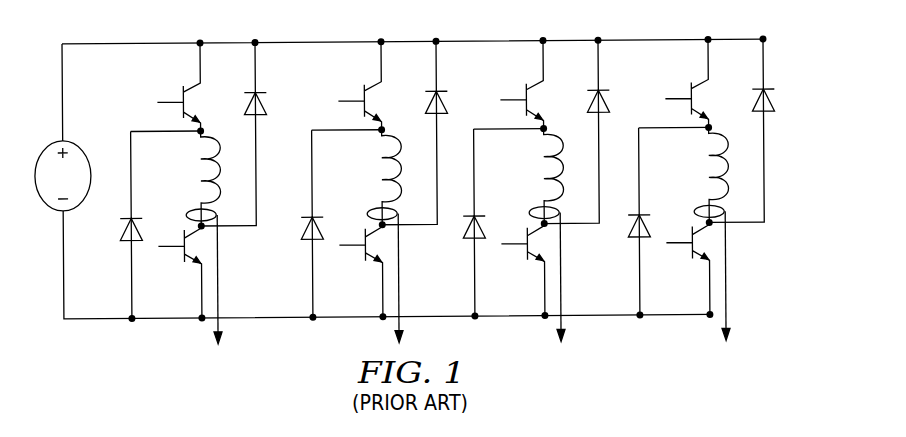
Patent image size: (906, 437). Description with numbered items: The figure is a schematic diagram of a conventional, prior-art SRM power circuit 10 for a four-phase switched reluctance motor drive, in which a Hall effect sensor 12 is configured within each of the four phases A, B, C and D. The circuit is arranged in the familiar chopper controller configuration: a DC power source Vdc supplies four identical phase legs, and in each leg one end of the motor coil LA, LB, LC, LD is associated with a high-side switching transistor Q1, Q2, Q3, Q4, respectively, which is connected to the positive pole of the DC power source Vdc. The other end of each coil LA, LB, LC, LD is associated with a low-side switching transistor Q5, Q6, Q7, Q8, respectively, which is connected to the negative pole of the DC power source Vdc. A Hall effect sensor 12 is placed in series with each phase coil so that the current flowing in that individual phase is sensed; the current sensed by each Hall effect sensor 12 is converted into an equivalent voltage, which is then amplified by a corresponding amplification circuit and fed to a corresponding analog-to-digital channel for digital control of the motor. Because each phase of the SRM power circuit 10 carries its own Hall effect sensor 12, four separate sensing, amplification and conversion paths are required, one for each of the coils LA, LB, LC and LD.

The SRM power circuit 10 is at (144, 25).
The Hall effect sensor 12 is at (214, 212).
The DC power source Vdc is at (63, 176).
The high-side switching transistor Q1 is at (193, 87).
The high-side switching transistor Q2 is at (374, 86).
The high-side switching transistor Q3 is at (536, 84).
The high-side switching transistor Q4 is at (701, 83).
The low-side switching transistor Q5 is at (180, 273).
The low-side switching transistor Q6 is at (361, 272).
The low-side switching transistor Q7 is at (523, 271).
The low-side switching transistor Q8 is at (688, 269).
The coil LA is at (195, 170).
The coil LB is at (376, 169).
The coil LC is at (538, 167).
The coil LD is at (703, 166).